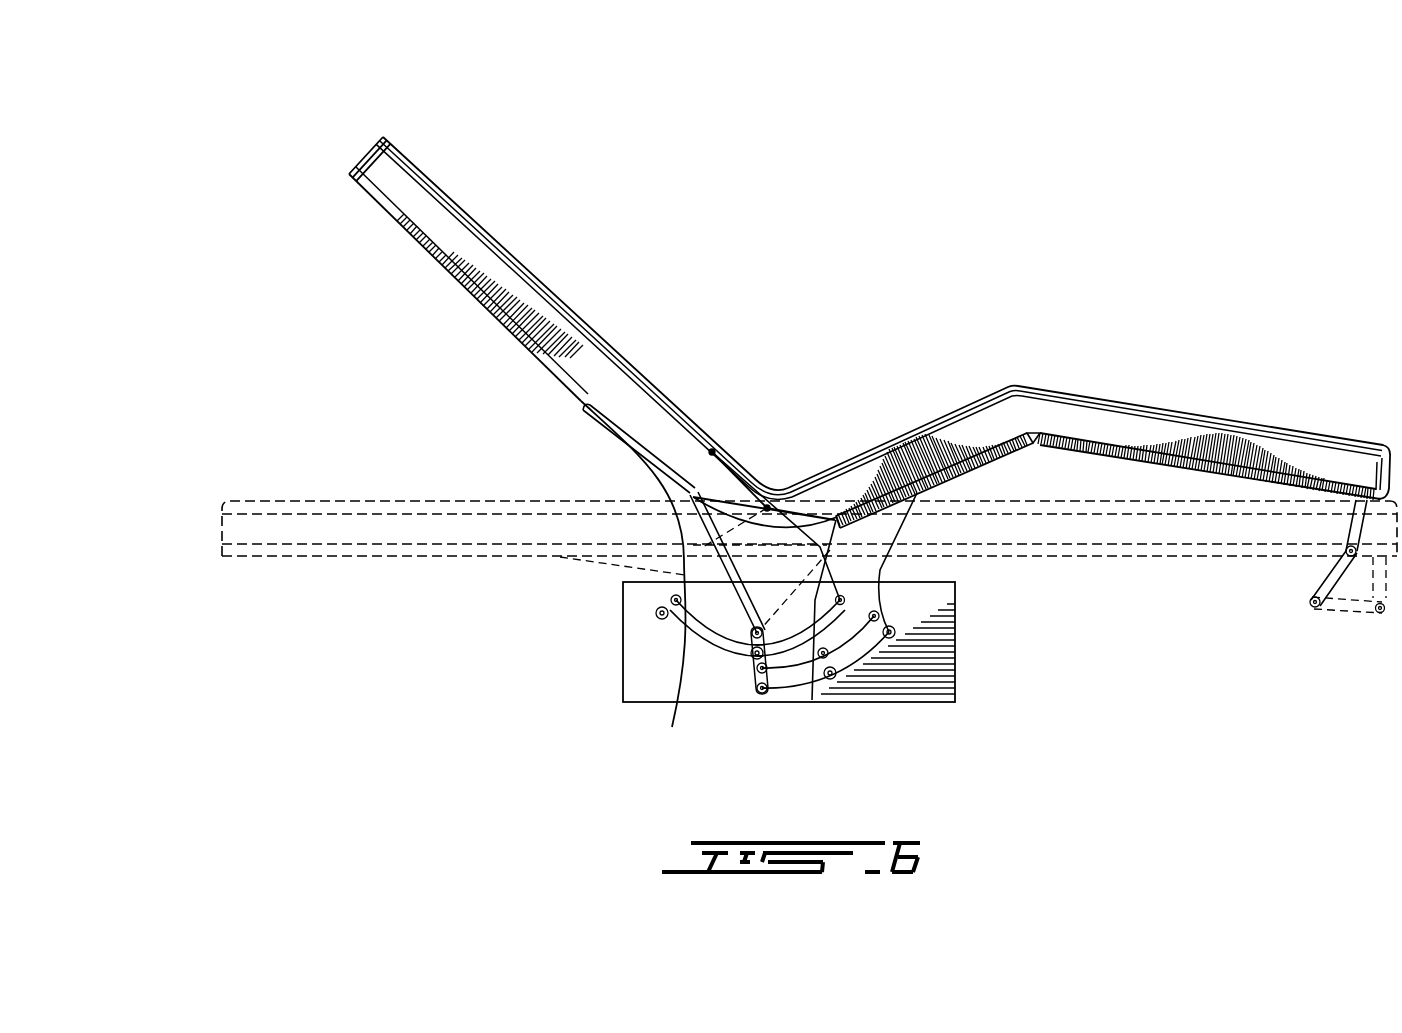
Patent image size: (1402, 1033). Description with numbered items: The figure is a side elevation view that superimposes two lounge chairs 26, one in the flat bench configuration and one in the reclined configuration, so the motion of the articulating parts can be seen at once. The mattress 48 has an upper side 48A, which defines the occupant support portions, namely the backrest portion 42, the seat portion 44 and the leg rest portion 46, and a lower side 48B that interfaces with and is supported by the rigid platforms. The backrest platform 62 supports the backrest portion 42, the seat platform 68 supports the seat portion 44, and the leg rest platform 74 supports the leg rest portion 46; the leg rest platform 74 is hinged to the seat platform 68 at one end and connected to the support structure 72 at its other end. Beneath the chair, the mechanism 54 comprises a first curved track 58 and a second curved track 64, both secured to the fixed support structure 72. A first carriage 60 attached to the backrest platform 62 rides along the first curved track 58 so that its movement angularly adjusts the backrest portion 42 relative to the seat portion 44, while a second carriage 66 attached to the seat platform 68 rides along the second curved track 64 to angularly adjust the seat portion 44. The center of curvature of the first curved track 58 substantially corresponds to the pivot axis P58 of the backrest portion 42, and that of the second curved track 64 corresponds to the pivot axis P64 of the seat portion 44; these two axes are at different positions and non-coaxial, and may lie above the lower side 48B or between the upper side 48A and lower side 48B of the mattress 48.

The lounge chair 26 is at (262, 442).
The backrest portion 42 is at (517, 258).
The seat portion 44 is at (962, 408).
The leg rest portion 46 is at (1150, 407).
The mattress 48 is at (350, 163).
The upper side 48A is at (546, 495).
The lower side 48B is at (416, 550).
The mechanism 54 is at (552, 682).
The first curved track 58 is at (700, 640).
The first carriage 60 is at (685, 587).
The backrest platform 62 is at (405, 232).
The second curved track 64 is at (850, 650).
The second carriage 66 is at (940, 590).
The seat platform 68 is at (1000, 447).
The support structure 72 is at (932, 683).
The leg rest platform 74 is at (1303, 480).
The pivot axis P58 is at (767, 506).
The pivot axis P64 is at (712, 450).